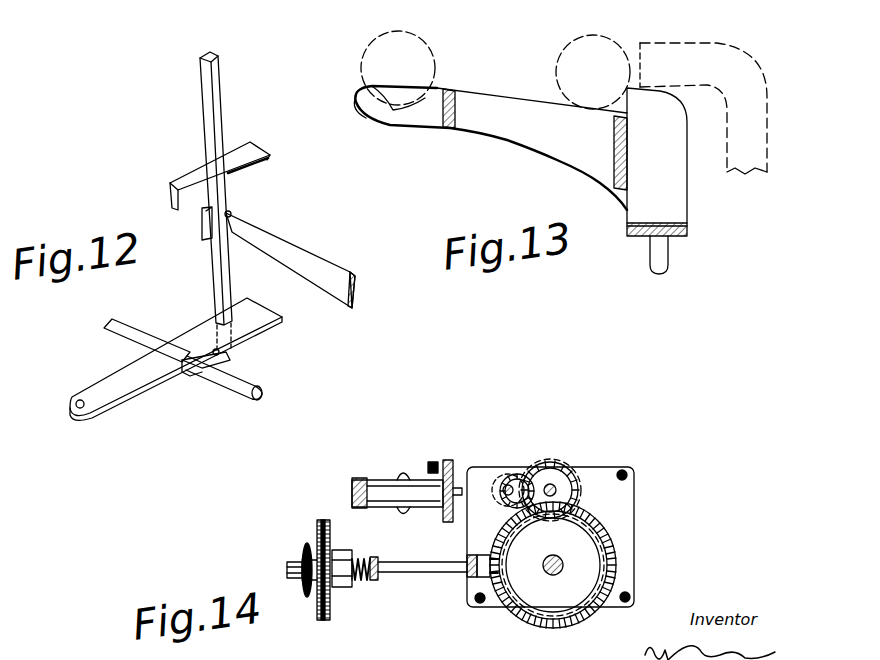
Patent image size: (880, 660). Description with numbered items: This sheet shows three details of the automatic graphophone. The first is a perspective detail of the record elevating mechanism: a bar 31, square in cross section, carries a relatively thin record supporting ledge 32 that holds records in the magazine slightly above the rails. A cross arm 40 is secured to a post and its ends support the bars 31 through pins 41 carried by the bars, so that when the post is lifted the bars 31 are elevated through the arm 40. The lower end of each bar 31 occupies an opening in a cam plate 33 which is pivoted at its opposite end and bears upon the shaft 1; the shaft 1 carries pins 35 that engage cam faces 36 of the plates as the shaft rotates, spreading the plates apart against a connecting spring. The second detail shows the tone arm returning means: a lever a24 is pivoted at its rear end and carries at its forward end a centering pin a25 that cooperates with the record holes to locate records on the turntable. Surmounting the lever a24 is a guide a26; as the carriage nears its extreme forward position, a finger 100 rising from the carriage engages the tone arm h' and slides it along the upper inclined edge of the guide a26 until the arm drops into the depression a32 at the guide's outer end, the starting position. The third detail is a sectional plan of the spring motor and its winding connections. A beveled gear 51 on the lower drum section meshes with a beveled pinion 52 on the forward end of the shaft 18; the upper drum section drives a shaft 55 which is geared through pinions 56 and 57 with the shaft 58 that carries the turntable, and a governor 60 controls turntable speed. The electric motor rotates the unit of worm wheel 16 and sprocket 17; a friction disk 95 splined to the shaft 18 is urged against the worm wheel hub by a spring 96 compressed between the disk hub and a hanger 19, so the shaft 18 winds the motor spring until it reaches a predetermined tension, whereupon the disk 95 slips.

In FIG. 12, the bar 31 is at (217, 95).
In FIG. 12, the record supporting ledge 32 is at (248, 152).
In FIG. 12, the pin 41 is at (232, 213).
In FIG. 12, the cross arm 40 is at (325, 266).
In FIG. 12, the cam plate 33 is at (195, 333).
In FIG. 12, the pin 35 is at (182, 372).
In FIG. 12, the cam face 36 is at (203, 368).
In FIG. 12, the shaft 1 is at (247, 383).
In FIG. 13, the tone arm h' is at (504, 57).
In FIG. 13, the guide a26 is at (530, 137).
In FIG. 13, the depression a32 is at (397, 115).
In FIG. 13, the lever a24 is at (690, 230).
In FIG. 13, the centering pin a25 is at (660, 257).
In FIG. 13, the finger 100 is at (733, 53).
In FIG. 14, the beveled pinion 52 is at (505, 603).
In FIG. 14, the beveled gear 51 is at (613, 553).
In FIG. 14, the shaft 55 is at (555, 490).
In FIG. 14, the pinion 56 is at (550, 460).
In FIG. 14, the pinion 57 is at (520, 476).
In FIG. 14, the shaft 58 is at (506, 484).
In FIG. 14, the shaft 18 is at (445, 568).
In FIG. 14, the hanger 19 is at (377, 558).
In FIG. 14, the spring 96 is at (370, 578).
In FIG. 14, the friction disk 95 is at (342, 556).
In FIG. 14, the worm wheel 16 is at (330, 532).
In FIG. 14, the sprocket 17 is at (303, 554).
In FIG. 14, the governor 60 is at (383, 482).